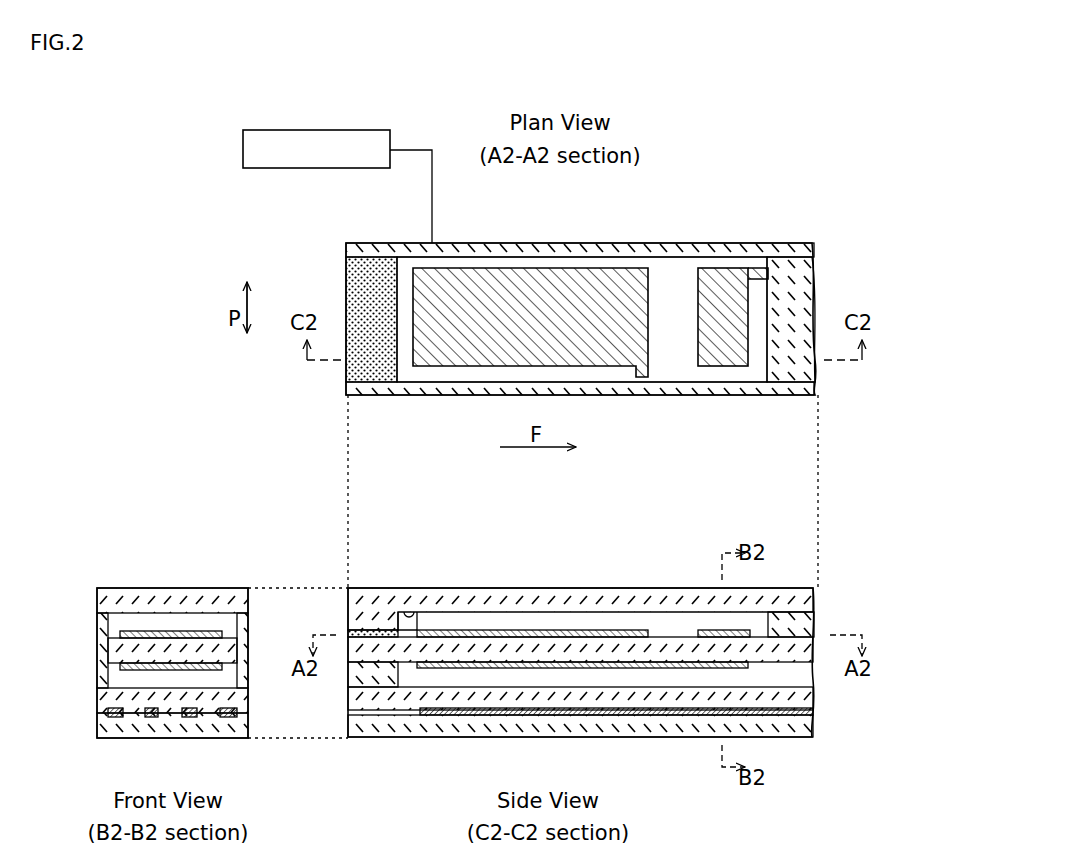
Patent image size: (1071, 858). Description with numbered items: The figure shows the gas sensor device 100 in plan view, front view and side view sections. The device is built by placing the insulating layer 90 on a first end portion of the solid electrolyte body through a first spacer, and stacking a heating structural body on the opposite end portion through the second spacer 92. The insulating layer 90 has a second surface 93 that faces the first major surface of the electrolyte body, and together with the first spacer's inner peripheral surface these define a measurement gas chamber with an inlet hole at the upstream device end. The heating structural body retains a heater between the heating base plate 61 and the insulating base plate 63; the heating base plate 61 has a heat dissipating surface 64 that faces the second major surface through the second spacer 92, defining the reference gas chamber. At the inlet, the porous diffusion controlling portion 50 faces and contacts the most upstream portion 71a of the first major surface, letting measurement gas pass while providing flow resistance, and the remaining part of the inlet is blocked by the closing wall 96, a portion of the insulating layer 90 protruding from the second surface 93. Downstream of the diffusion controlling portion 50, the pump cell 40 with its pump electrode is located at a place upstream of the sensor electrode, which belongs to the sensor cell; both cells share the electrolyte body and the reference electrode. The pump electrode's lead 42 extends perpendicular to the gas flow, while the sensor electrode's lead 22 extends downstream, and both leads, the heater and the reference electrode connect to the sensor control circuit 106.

The sensor control circuit 106 is at (338, 130).
The gas sensor device 100 is at (298, 273).
The lead 22 is at (757, 270).
The pump cell 40 is at (557, 545).
The lead 42 is at (648, 378).
The diffusion controlling portion 50 is at (363, 268).
The heating base plate 61 is at (818, 692).
The insulating base plate 63 is at (662, 716).
The heat dissipating surface 64 is at (470, 690).
The most upstream portion 71a is at (417, 692).
The insulating layer 90 is at (818, 600).
The second spacer 92 is at (378, 738).
The second surface 93 is at (405, 614).
The closing wall 96 is at (375, 630).